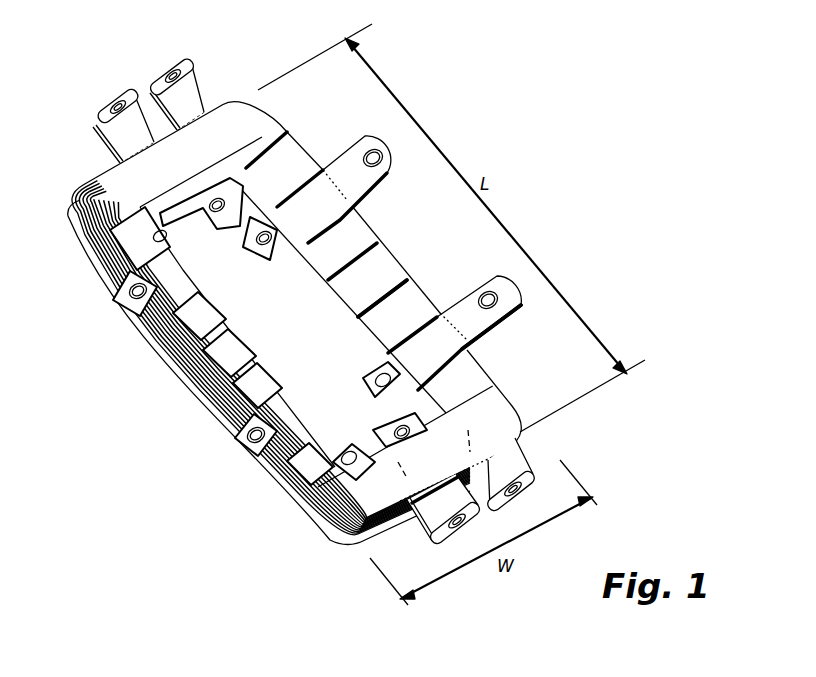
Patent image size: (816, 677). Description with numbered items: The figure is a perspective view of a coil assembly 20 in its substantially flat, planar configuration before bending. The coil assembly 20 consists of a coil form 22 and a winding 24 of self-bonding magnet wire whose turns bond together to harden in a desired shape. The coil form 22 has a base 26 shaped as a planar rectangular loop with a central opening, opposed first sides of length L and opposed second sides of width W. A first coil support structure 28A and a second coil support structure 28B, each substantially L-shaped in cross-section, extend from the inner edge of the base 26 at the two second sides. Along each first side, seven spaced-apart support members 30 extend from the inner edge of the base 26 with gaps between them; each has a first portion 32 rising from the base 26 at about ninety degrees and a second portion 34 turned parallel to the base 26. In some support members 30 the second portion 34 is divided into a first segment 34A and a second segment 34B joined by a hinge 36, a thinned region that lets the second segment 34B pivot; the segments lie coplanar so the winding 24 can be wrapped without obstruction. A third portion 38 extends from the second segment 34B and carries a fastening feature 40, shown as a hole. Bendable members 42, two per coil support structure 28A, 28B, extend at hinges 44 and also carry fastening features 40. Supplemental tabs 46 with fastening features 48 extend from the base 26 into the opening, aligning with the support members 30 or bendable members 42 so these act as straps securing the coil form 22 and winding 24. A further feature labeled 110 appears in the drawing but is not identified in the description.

The coil assembly 20 is at (290, 281).
The coil form 22 is at (497, 424).
The winding 24 is at (80, 196).
The base 26 is at (66, 224).
The first coil support structure 28A is at (450, 471).
The second coil support structure 28B is at (203, 164).
The support members 30 is at (285, 157).
The first portion 32 is at (364, 304).
The second portion 34 is at (392, 277).
The first substantially planar segment 34A is at (432, 337).
The second substantially planar segment 34B is at (468, 326).
The hinge 36 is at (347, 178).
The third portion 38 is at (510, 306).
The fastening feature 40 is at (489, 296).
The bendable members 42 is at (192, 62).
The hinges 44 is at (120, 140).
The supplemental tabs 46 is at (273, 251).
The fastening feature 48 is at (205, 209).
The tab flange 110 is at (172, 66).